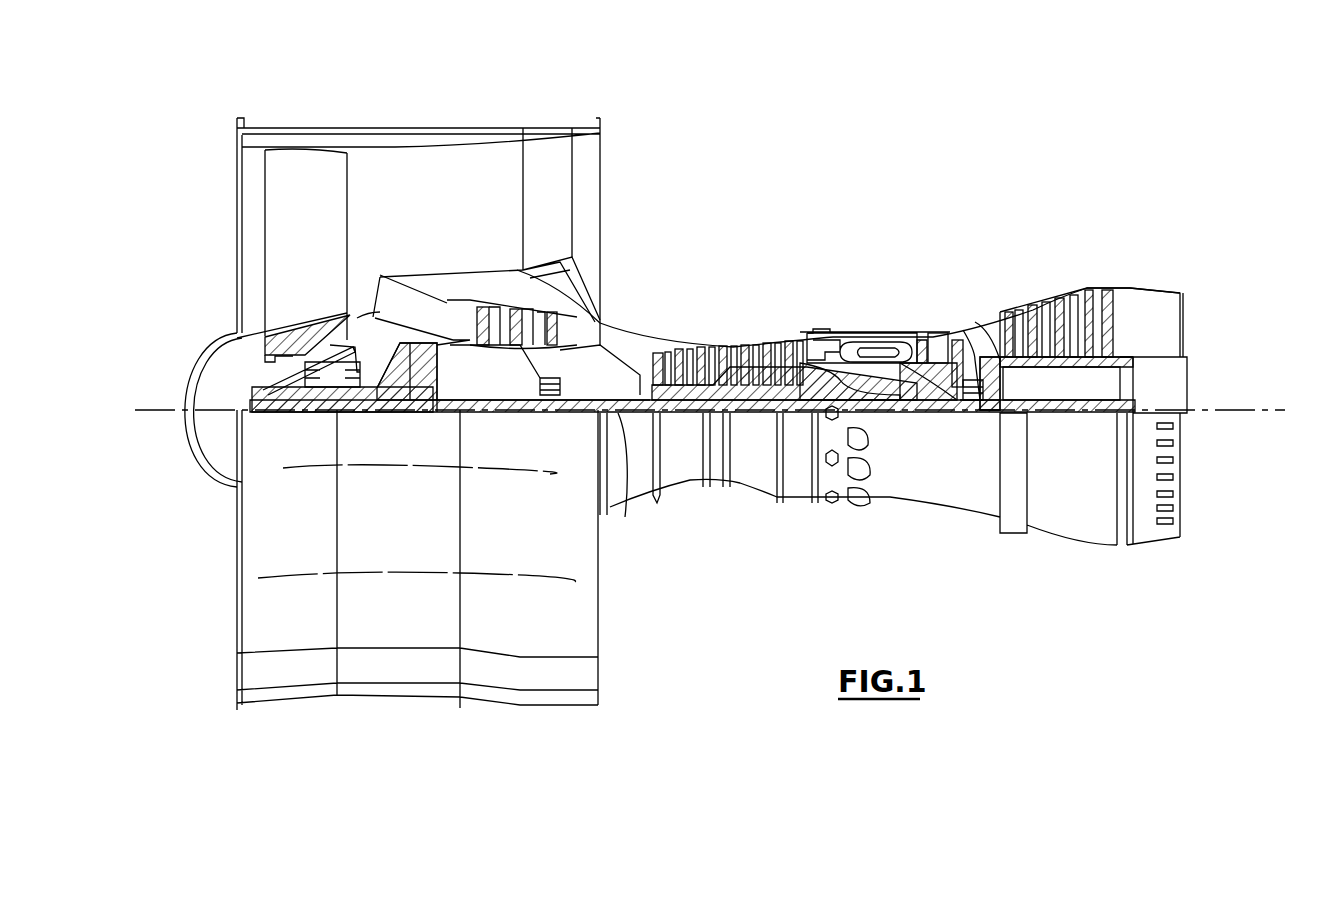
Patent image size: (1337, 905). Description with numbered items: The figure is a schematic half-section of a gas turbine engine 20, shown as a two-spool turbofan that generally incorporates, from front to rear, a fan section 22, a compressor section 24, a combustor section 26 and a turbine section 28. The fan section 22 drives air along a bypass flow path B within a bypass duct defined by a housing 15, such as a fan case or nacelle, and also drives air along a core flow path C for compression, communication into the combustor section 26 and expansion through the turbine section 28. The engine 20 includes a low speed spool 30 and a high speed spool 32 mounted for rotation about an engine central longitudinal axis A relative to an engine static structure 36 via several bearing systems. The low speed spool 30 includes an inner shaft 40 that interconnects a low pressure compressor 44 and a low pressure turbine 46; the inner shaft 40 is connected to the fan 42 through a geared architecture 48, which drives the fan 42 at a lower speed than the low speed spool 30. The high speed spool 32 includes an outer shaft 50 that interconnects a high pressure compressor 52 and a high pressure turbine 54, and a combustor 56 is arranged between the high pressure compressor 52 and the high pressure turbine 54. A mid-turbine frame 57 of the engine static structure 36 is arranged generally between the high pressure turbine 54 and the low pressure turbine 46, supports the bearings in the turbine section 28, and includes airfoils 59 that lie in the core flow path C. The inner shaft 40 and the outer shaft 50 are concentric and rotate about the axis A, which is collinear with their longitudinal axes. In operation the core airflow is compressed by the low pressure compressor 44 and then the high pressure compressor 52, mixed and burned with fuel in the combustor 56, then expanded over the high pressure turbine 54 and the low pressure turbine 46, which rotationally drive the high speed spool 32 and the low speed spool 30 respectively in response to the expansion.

The gas turbine engine 20 is at (686, 383).
The fan section 22 is at (418, 198).
The compressor section 24 is at (650, 320).
The combustor section 26 is at (878, 326).
The turbine section 28 is at (1081, 379).
The housing 15 is at (420, 133).
The low speed spool 30 is at (755, 420).
The high speed spool 32 is at (800, 345).
The engine static structure 36 is at (795, 505).
The inner shaft 40 is at (620, 430).
The fan 42 is at (320, 255).
The low pressure compressor 44 is at (523, 318).
The low pressure turbine 46 is at (1065, 300).
The geared architecture 48 is at (425, 395).
The outer shaft 50 is at (878, 392).
The high pressure compressor 52 is at (728, 378).
The high pressure turbine 54 is at (940, 340).
The combustor 56 is at (870, 355).
The mid-turbine frame 57 is at (975, 322).
The airfoils 59 is at (975, 350).
The engine central longitudinal axis A is at (1270, 410).
The bypass flow path B is at (382, 203).
The core flow path C is at (427, 312).